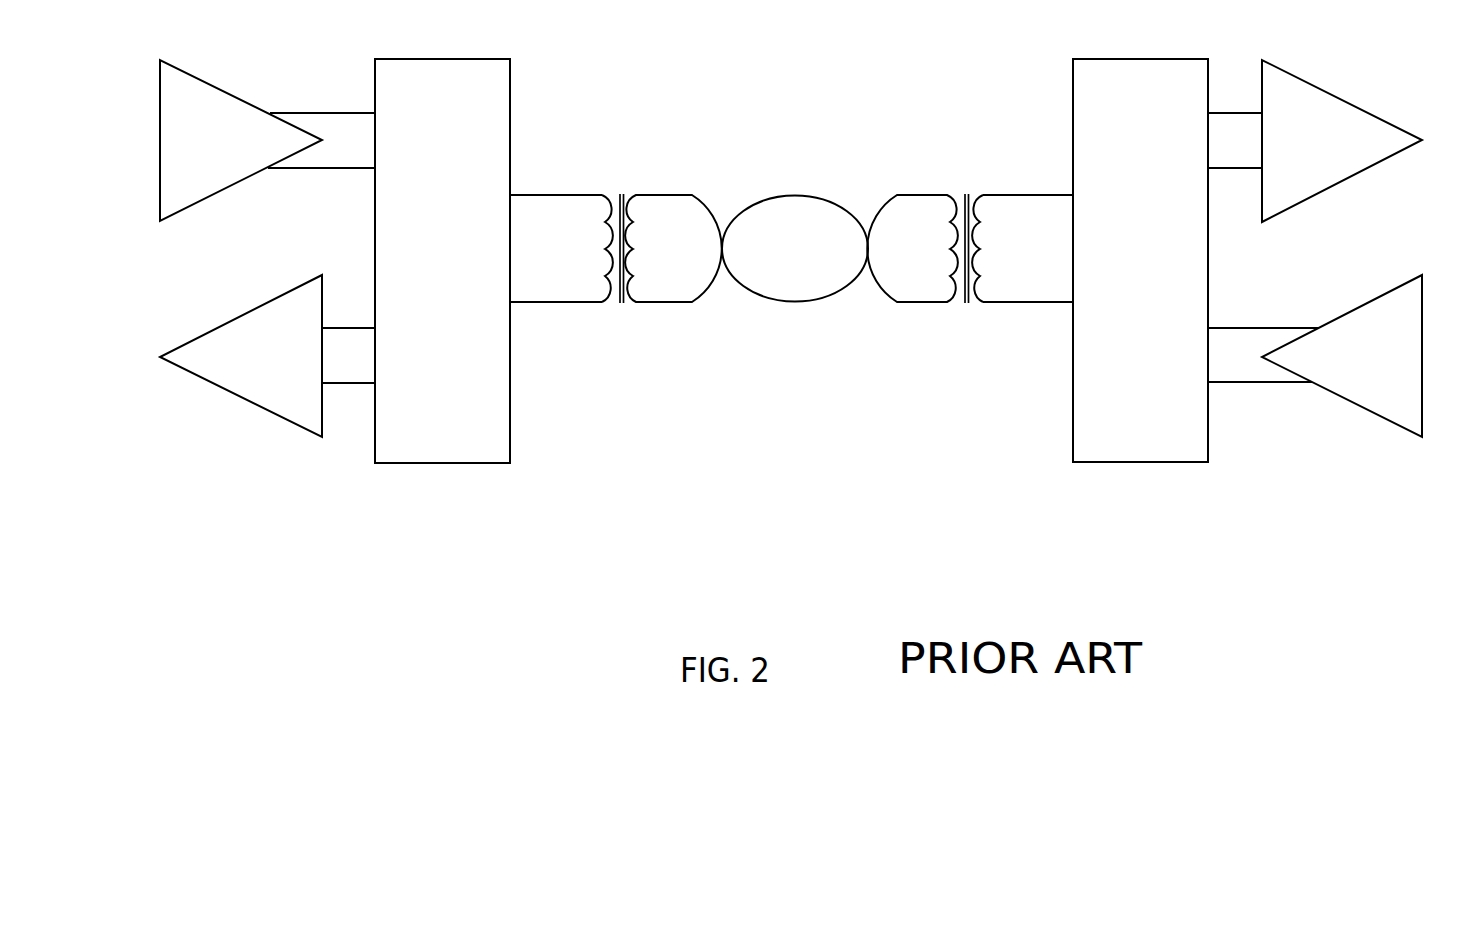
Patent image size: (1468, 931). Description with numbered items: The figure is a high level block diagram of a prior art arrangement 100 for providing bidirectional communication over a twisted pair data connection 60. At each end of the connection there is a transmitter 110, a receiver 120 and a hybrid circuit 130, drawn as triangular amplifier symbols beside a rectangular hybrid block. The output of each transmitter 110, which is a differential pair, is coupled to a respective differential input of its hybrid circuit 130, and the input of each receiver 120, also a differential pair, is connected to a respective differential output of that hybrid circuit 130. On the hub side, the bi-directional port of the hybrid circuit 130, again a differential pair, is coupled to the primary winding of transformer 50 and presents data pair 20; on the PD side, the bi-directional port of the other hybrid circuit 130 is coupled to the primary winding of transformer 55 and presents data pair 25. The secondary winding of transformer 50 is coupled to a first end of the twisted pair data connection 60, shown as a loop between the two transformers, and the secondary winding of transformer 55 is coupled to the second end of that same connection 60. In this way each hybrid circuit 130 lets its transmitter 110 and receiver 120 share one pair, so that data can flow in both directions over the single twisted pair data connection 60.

The arrangement 100 is at (791, 274).
The transmitter 110 is at (213, 85).
The receiver 120 is at (1315, 83).
The hybrid circuit 130 is at (455, 463).
The data pair 20 is at (548, 195).
The data pair 25 is at (1047, 302).
The transformer 50 is at (617, 312).
The transformer 55 is at (960, 315).
The twisted pair data connection 60 is at (794, 302).